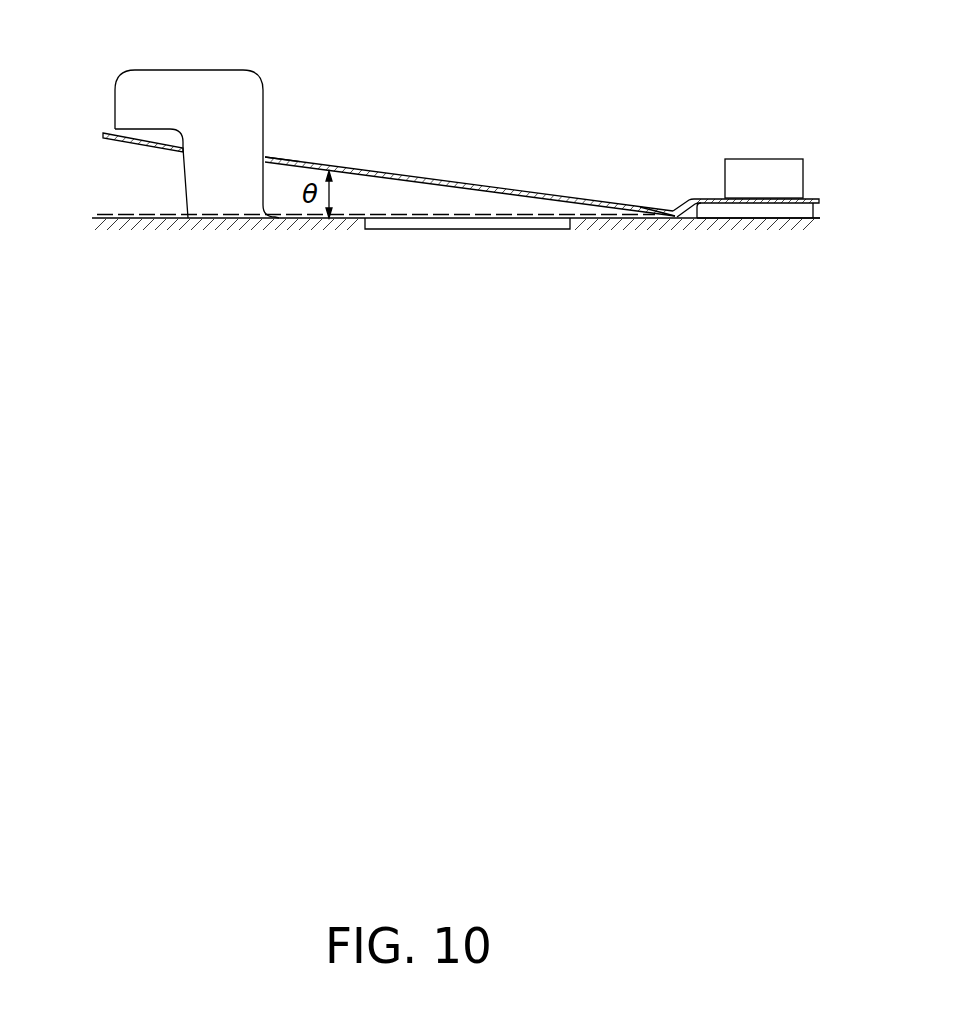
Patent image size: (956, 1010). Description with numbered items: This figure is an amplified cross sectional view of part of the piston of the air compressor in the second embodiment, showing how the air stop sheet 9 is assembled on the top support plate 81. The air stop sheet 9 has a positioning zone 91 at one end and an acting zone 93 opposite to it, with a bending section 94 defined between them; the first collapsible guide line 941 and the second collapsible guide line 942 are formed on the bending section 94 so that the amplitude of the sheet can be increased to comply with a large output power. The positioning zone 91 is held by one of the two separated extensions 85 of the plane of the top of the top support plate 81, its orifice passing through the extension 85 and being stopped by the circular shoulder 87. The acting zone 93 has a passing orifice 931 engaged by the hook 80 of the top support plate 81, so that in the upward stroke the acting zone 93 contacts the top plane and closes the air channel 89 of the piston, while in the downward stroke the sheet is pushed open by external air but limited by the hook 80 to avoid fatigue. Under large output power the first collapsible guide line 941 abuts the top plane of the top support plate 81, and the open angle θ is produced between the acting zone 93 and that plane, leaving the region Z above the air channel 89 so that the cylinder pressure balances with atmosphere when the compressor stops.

The air stop sheet 9 is at (92, 213).
The hook 80 is at (160, 102).
The top support plate 81 is at (820, 218).
The extension 85 is at (752, 173).
The circular shoulder 87 is at (773, 212).
The air channel 89 is at (548, 222).
The positioning zone 91 is at (712, 202).
The acting zone 93 is at (363, 170).
The passing orifice 931 is at (277, 157).
The bending section 94 is at (670, 213).
The first collapsible guide line 941 is at (670, 215).
The second collapsible guide line 942 is at (690, 200).
The gap region Z is at (448, 200).